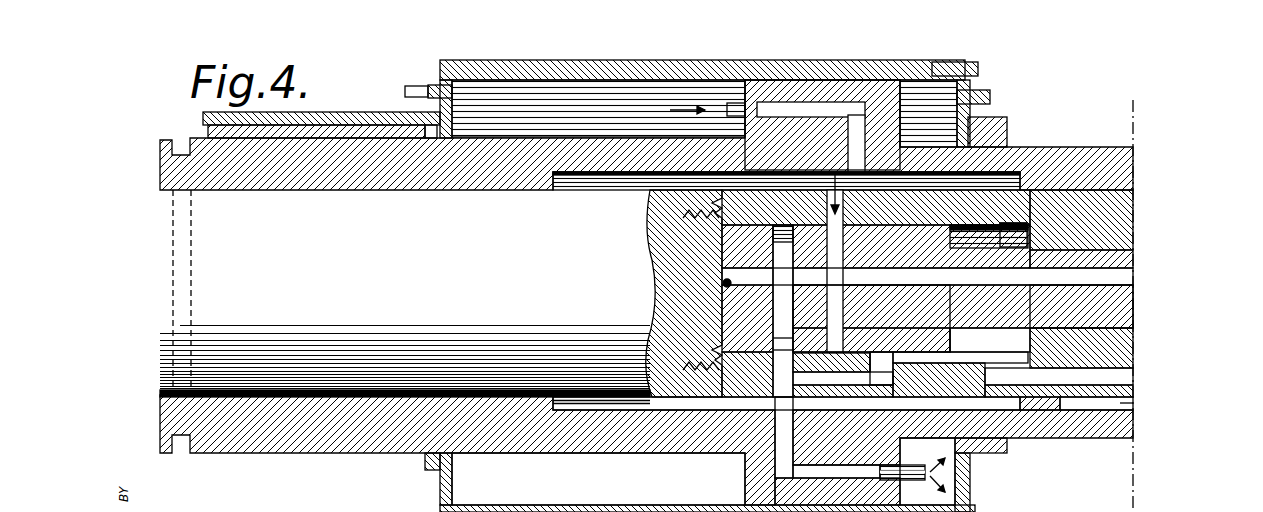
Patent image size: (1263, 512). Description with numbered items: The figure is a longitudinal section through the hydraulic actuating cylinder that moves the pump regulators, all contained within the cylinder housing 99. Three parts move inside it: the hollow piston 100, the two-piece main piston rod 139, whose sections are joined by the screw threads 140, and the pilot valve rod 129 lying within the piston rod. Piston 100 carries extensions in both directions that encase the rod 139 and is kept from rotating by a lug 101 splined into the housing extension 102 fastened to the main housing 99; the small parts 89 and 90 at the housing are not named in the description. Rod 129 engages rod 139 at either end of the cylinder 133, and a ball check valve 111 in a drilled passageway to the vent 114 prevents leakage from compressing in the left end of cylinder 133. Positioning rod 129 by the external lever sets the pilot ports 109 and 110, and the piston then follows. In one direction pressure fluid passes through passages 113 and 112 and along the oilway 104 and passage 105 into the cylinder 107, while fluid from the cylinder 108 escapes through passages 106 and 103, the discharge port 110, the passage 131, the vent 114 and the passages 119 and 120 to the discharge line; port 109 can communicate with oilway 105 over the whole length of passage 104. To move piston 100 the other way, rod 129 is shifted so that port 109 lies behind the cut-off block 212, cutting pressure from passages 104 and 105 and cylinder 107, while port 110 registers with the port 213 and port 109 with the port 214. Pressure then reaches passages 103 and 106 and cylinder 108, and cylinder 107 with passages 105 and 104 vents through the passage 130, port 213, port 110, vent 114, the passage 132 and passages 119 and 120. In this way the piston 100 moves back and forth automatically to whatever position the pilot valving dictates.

The piston 100 is at (538, 156).
The lug 101 is at (210, 132).
The housing extension 102 is at (327, 111).
The housing 99 is at (473, 64).
The fitting 89 is at (405, 92).
The cylinder 108 is at (548, 114).
The passage 106 is at (812, 104).
The screw 90 is at (975, 96).
The cylinder 107 is at (985, 126).
The passage 103 is at (627, 186).
The oilway 104 is at (591, 400).
The main piston rod 139 is at (545, 304).
The screw threads 140 is at (700, 225).
The pilot valve port 109 is at (785, 240).
The discharge port 110 is at (838, 232).
The port 214 is at (826, 208).
The ball check valve 111 is at (724, 284).
The passage 112 is at (785, 305).
The passage 113 is at (1118, 279).
The passage 131 is at (862, 250).
The cylinder 133 is at (1020, 234).
The vent 114 is at (900, 322).
The pilot valve rod 129 is at (1135, 311).
The passage 132 is at (970, 358).
The passage 119 is at (1135, 377).
The passage 120 is at (1132, 403).
The port 213 is at (890, 366).
The passage 130 is at (836, 402).
The cut-off block 212 is at (870, 362).
The oilway 105 is at (836, 472).